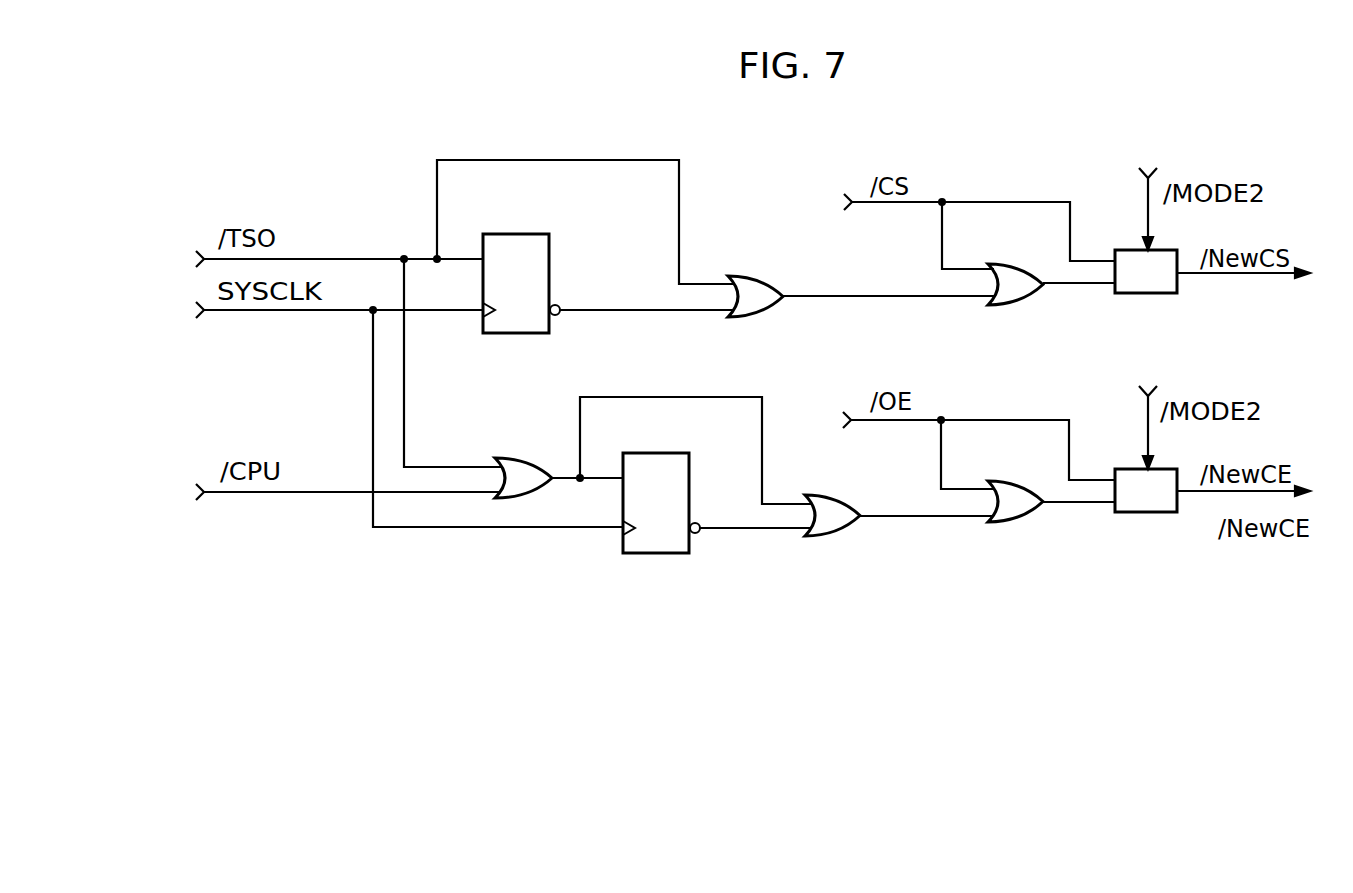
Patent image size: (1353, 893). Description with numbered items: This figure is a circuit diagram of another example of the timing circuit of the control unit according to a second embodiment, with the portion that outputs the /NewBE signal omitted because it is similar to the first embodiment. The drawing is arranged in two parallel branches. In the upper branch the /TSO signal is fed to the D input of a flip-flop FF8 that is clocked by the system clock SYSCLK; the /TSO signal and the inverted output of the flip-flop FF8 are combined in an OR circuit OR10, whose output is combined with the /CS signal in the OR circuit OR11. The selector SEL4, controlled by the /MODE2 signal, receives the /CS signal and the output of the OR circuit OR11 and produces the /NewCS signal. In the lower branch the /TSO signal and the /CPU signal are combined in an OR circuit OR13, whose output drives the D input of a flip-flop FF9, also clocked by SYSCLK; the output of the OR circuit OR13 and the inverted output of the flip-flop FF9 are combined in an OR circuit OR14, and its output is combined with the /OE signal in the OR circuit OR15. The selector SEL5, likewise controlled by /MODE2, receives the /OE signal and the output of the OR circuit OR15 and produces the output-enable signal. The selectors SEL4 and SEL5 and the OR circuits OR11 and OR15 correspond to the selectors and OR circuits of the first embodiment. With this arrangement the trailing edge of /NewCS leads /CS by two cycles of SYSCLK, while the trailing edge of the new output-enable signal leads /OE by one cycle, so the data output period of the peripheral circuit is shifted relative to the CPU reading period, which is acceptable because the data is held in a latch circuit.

The D flip-flop FF8 is at (522, 234).
The D flip-flop FF9 is at (660, 453).
The OR gate OR10 is at (752, 275).
The OR circuit OR11 is at (1007, 305).
The OR gate OR13 is at (515, 458).
The OR gate OR14 is at (818, 537).
The OR circuit OR15 is at (1007, 523).
The selector SEL4 is at (1135, 293).
The selector SEL5 is at (1148, 513).